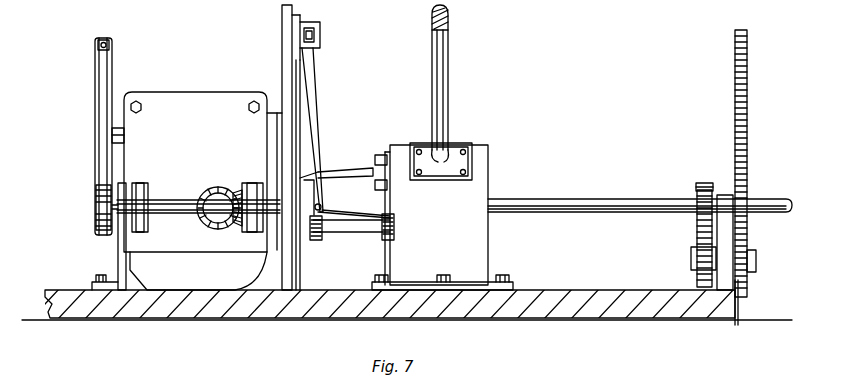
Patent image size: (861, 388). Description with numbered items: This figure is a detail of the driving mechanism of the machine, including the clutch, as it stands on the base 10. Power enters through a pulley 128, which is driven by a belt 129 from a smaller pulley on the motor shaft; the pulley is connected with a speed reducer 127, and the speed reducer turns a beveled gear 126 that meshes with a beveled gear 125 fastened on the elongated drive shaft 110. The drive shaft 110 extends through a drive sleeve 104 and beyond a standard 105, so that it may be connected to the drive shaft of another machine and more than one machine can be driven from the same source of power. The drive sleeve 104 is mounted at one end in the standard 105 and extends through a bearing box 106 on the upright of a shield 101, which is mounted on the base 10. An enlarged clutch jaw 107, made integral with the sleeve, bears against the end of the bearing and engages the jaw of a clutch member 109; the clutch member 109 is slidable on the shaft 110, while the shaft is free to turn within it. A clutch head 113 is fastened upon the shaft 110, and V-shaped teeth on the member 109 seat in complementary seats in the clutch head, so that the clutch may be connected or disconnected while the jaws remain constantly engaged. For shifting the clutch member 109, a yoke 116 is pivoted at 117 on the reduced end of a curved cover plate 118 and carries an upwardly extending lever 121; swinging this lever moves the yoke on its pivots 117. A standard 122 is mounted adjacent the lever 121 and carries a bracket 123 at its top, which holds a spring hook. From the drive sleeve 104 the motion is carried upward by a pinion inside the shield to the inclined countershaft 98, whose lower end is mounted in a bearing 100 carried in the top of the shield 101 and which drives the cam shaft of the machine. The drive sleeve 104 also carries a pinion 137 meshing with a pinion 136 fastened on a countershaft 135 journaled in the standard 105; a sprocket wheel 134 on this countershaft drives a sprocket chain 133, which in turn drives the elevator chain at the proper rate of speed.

The base 10 is at (575, 312).
The inclined countershaft 98 is at (449, 58).
The bearing 100 is at (462, 146).
The shield 101 is at (490, 186).
The drive sleeve 104 is at (600, 206).
The standard 105 is at (737, 240).
The bearing box 106 is at (396, 232).
The clutch jaw 107 is at (371, 234).
The clutch member 109 is at (313, 242).
The drive shaft 110 is at (179, 215).
The clutch head 113 is at (296, 182).
The yoke 116 is at (316, 189).
The pivot 117 is at (321, 207).
The curved cover plate 118 is at (366, 170).
The lever 121 is at (312, 85).
The standard 122 is at (283, 68).
The bracket 123 is at (320, 32).
The beveled gear 125 is at (237, 193).
The beveled gear 126 is at (212, 195).
The speed reducer 127 is at (187, 100).
The pulley 128 is at (97, 52).
The belt 129 is at (107, 82).
The sprocket chain 133 is at (748, 80).
The sprocket wheel 134 is at (757, 280).
The countershaft 135 is at (696, 258).
The pinion 136 is at (698, 275).
The pinion 137 is at (704, 188).